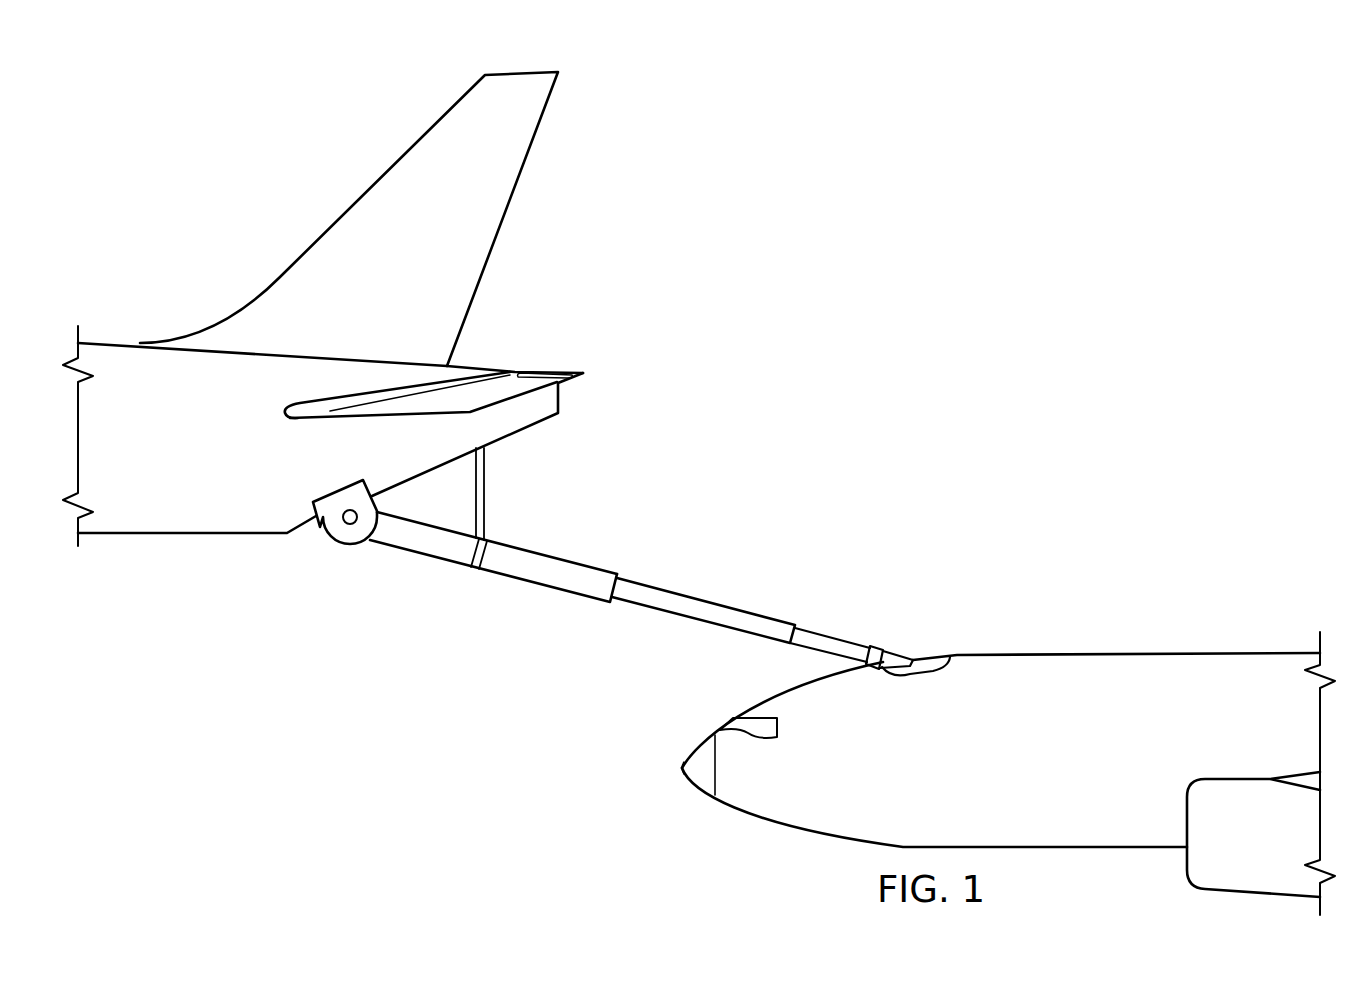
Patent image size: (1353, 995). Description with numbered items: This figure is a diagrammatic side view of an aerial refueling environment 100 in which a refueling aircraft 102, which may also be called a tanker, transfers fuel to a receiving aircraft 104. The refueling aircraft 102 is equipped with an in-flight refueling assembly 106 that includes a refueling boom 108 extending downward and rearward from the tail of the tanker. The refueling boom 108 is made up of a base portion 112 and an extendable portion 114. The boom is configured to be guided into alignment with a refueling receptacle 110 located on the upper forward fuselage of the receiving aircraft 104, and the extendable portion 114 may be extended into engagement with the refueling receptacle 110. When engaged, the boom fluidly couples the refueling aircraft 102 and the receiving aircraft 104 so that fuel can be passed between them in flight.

The aerial refueling environment 100 is at (985, 188).
The refueling aircraft 102 is at (243, 231).
The receiving aircraft 104 is at (1059, 632).
The in-flight refueling assembly 106 is at (472, 676).
The refueling boom 108 is at (561, 599).
The refueling receptacle 110 is at (893, 650).
The base portion 112 is at (545, 553).
The extendable portion 114 is at (771, 607).